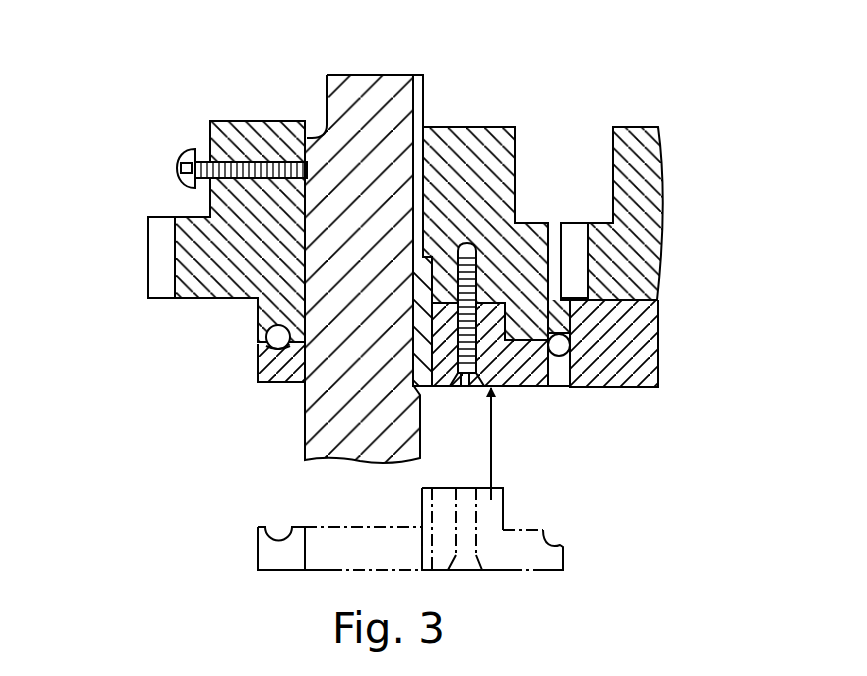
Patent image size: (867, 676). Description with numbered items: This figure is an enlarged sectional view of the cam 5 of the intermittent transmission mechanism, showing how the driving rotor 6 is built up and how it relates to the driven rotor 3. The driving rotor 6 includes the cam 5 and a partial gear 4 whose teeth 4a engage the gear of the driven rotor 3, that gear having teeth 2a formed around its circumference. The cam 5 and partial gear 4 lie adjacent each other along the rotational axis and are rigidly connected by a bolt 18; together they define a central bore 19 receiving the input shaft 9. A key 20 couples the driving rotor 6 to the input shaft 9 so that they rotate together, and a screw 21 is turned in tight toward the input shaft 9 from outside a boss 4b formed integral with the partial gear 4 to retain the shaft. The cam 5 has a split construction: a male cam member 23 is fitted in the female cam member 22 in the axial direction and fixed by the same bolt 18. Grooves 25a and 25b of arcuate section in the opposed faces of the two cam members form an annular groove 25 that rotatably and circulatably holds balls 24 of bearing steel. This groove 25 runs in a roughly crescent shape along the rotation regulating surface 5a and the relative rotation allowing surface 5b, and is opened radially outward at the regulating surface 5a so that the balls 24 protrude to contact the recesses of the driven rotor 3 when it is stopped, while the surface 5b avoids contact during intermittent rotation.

The teeth 2a is at (573, 233).
The driven rotor 3 is at (636, 125).
The partial gear 4 is at (247, 120).
The teeth 4a is at (163, 263).
The boss 4b is at (220, 203).
The cam 5 is at (543, 392).
The rotation regulating surface 5a is at (572, 372).
The relative rotation allowing surface 5b is at (255, 367).
The driving rotor 6 is at (198, 107).
The input shaft 9 is at (378, 85).
The bolt 18 is at (456, 386).
The central bore 19 is at (322, 132).
The key 20 is at (418, 342).
The screw 21 is at (185, 150).
The female cam member 22 is at (528, 323).
The male cam member 23 is at (522, 368).
The balls 24 is at (260, 327).
The annular groove 25 is at (277, 357).
The groove 25a is at (570, 340).
The groove 25b is at (572, 348).